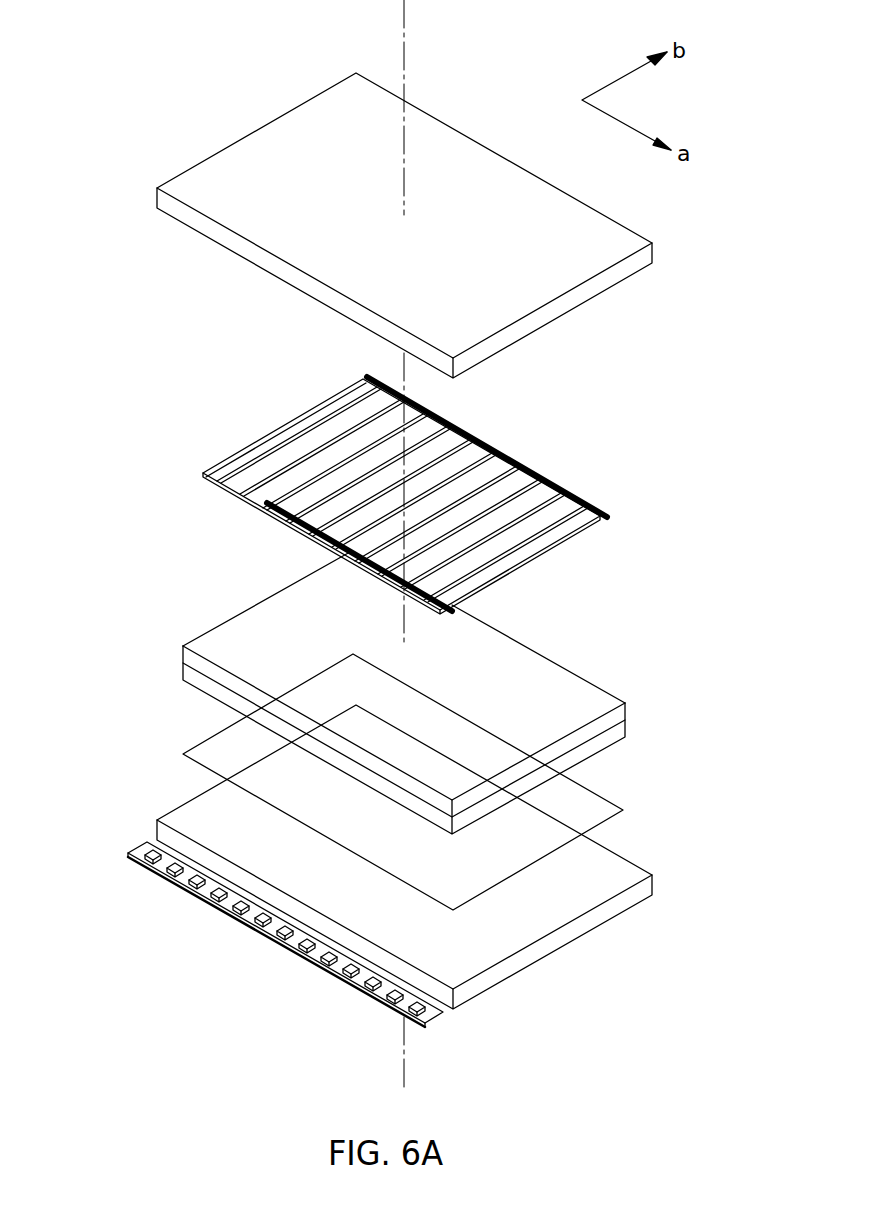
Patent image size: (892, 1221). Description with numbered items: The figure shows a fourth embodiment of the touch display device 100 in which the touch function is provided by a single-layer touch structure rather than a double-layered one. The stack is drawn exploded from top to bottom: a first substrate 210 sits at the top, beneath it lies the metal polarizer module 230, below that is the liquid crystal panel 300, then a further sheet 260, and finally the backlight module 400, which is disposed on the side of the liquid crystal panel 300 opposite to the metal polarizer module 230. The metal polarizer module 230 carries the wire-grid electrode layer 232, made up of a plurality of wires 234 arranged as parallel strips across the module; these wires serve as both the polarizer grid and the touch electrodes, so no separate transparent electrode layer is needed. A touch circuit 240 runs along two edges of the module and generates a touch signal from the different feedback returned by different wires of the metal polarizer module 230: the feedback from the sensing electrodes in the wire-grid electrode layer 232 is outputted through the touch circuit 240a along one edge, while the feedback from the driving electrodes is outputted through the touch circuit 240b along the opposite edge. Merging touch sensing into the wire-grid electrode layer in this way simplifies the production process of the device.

The touch display device 100 is at (213, 25).
The first substrate 210 is at (157, 198).
The metal polarizer module 230 is at (226, 453).
The wire-grid electrode layer 232 is at (218, 474).
The wires 234 is at (272, 482).
The touch circuit 240 is at (492, 504).
The touch circuit 240a is at (517, 460).
The touch circuit 240b is at (455, 614).
The liquid crystal panel 300 is at (182, 663).
The optical sheet 260 is at (202, 741).
The backlight module 400 is at (147, 842).